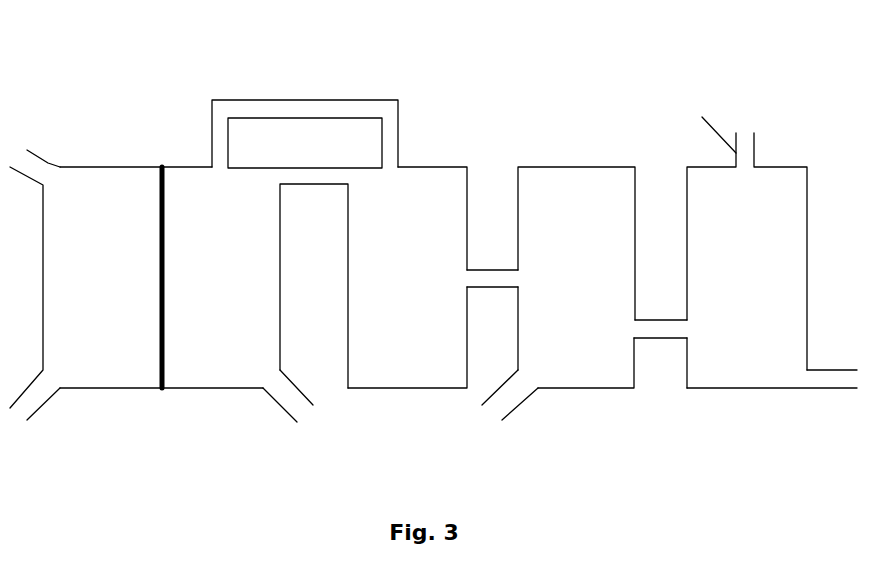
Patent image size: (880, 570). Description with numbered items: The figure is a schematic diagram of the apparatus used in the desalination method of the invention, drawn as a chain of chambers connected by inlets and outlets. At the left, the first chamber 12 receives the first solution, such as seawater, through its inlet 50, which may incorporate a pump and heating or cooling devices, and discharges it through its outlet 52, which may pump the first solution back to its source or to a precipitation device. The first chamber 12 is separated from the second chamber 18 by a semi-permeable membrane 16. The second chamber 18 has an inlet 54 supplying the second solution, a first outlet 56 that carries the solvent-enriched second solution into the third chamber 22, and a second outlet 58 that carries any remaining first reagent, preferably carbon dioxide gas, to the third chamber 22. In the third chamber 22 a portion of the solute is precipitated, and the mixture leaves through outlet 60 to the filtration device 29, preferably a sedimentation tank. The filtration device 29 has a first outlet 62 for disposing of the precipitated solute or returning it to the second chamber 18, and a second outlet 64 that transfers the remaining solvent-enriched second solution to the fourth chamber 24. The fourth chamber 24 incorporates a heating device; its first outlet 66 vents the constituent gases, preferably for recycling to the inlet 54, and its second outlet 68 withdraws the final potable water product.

The first chamber 12 is at (105, 275).
The semi-permeable membrane 16 is at (162, 167).
The second chamber 18 is at (220, 275).
The third chamber 22 is at (410, 275).
The fourth chamber 24 is at (748, 275).
The filtration device 29 is at (580, 275).
The inlet 50 is at (44, 152).
The outlet 52 is at (43, 408).
The inlet 54 is at (278, 405).
The first outlet 56 is at (313, 184).
The second outlet 58 is at (297, 100).
The outlet 60 is at (500, 270).
The first outlet 62 is at (517, 405).
The second outlet 64 is at (668, 320).
The first outlet 66 is at (695, 124).
The second outlet 68 is at (840, 388).